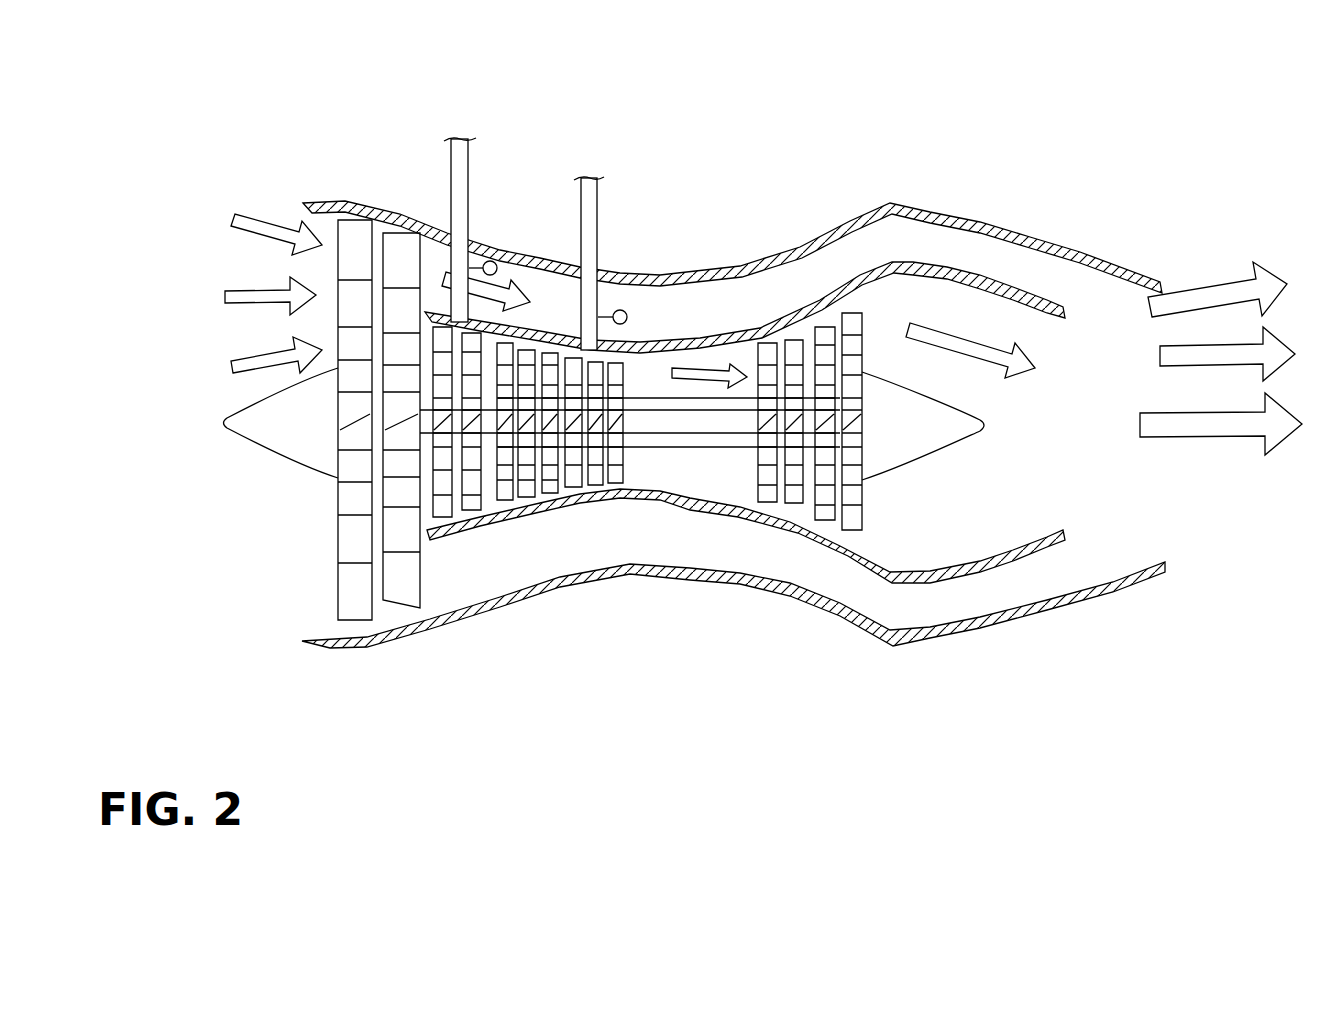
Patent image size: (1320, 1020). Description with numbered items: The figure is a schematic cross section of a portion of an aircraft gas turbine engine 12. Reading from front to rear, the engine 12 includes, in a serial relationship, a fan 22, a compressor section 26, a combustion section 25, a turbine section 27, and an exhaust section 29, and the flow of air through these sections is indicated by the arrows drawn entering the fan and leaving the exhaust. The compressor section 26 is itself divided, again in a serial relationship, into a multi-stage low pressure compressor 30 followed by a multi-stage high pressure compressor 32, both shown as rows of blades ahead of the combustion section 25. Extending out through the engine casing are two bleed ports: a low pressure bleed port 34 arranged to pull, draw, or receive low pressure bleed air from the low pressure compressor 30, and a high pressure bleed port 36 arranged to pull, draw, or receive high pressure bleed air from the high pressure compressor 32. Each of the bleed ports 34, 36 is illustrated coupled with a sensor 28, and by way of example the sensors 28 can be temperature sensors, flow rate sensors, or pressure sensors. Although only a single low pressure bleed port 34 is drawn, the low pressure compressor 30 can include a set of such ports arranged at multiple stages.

The gas turbine engine 12 is at (318, 128).
The fan 22 is at (350, 590).
The combustion section 25 is at (715, 477).
The compressor section 26 is at (521, 500).
The turbine section 27 is at (797, 502).
The sensors 28 is at (489, 260).
The exhaust section 29 is at (1030, 477).
The low pressure compressor 30 is at (455, 507).
The high pressure compressor 32 is at (565, 487).
The low pressure bleed port 34 is at (458, 185).
The high pressure bleed port 36 is at (636, 320).